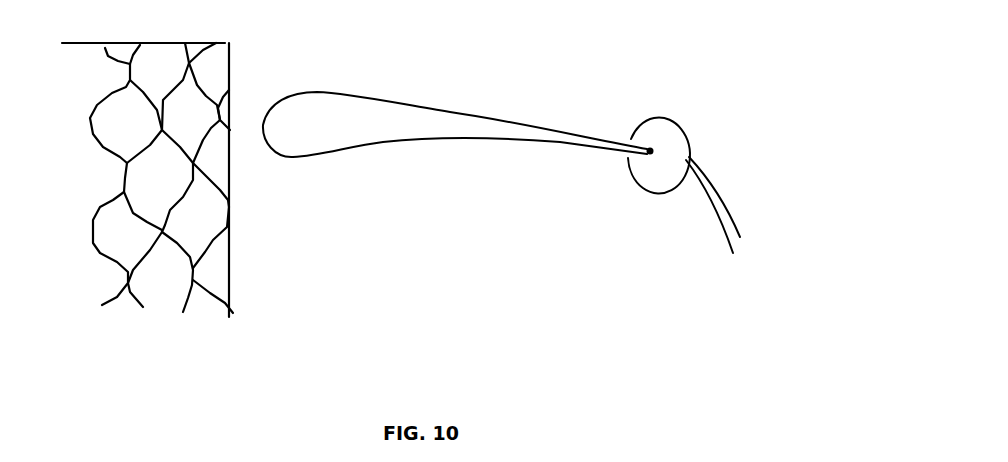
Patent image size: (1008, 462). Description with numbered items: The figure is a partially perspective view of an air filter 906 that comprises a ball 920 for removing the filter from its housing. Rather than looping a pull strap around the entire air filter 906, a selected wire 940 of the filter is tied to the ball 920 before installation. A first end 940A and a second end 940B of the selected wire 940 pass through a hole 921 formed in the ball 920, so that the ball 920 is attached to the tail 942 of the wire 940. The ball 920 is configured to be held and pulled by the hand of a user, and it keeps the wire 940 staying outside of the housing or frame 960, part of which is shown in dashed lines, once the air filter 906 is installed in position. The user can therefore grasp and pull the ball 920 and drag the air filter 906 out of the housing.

The air filter 906 is at (205, 340).
The frame 960 is at (198, 90).
The ball 920 is at (672, 132).
The hole 921 is at (653, 167).
The wire 940 is at (563, 219).
The tail 942 is at (770, 252).
The first end 940A is at (757, 245).
The second end 940B is at (723, 270).